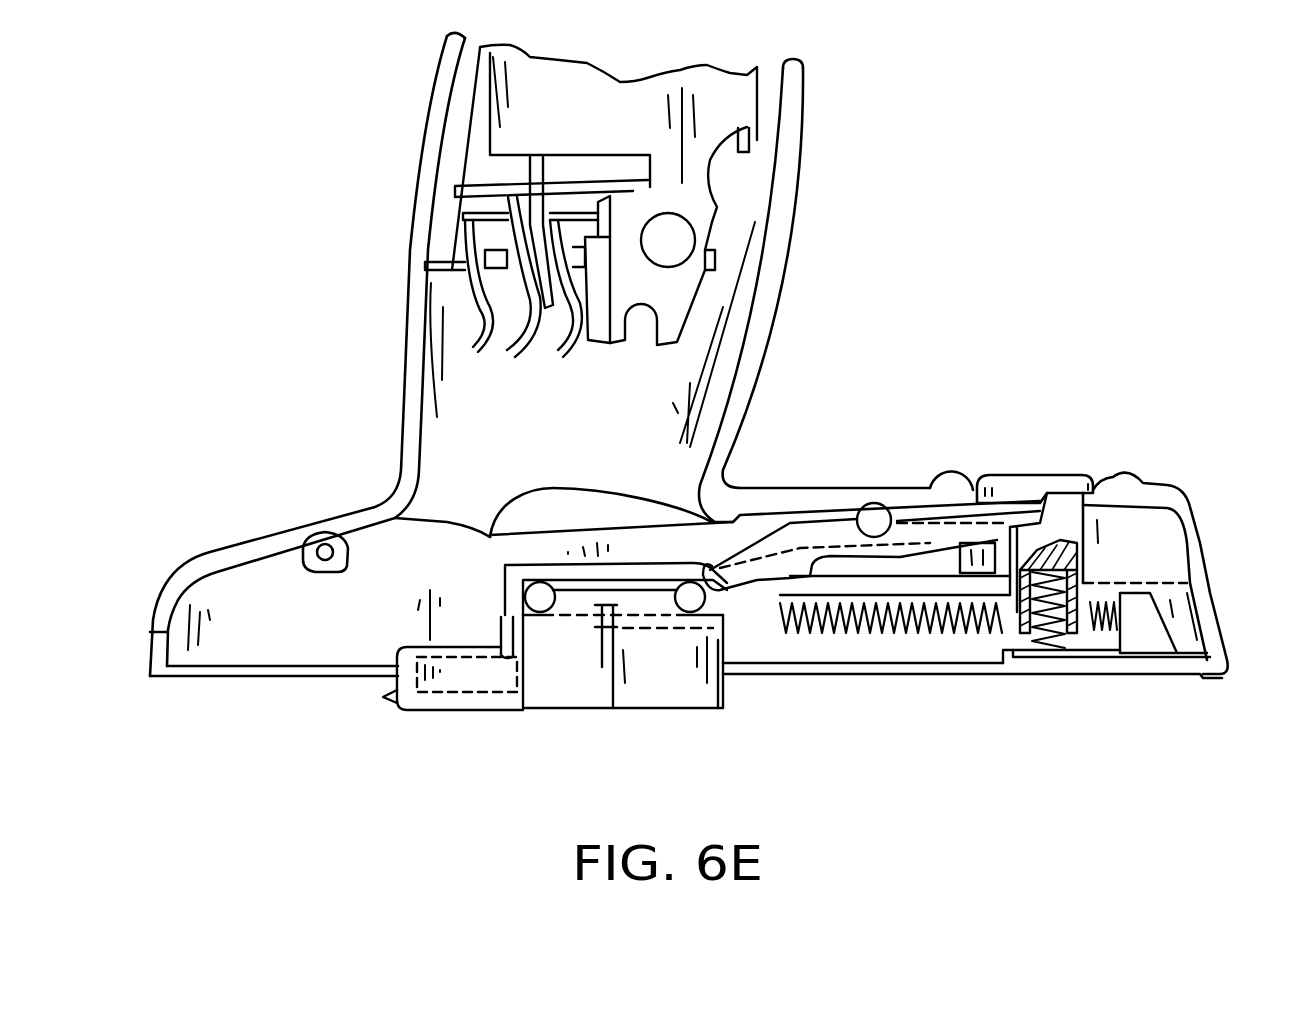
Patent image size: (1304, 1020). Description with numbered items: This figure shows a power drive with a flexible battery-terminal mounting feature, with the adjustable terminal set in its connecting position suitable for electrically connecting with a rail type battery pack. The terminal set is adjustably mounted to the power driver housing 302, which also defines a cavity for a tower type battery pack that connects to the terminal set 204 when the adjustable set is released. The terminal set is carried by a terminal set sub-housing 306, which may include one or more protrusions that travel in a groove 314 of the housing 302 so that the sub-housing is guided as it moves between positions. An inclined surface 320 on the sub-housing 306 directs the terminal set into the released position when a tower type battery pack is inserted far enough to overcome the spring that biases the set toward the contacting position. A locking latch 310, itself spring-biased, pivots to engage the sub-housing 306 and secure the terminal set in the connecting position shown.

The terminal set 204 is at (535, 379).
The power driver housing 302 is at (430, 133).
The terminal set sub-housing 306 is at (575, 683).
The locking latch 310 is at (1042, 476).
The groove 314 is at (960, 557).
The inclined surface 320 is at (391, 700).